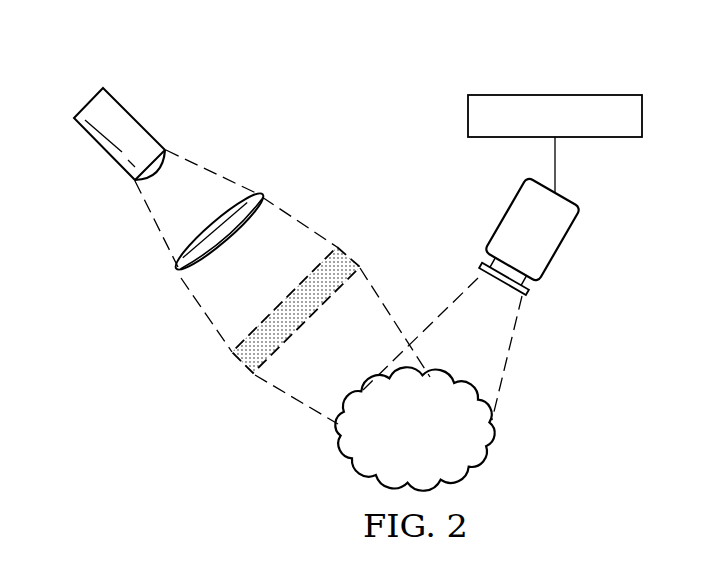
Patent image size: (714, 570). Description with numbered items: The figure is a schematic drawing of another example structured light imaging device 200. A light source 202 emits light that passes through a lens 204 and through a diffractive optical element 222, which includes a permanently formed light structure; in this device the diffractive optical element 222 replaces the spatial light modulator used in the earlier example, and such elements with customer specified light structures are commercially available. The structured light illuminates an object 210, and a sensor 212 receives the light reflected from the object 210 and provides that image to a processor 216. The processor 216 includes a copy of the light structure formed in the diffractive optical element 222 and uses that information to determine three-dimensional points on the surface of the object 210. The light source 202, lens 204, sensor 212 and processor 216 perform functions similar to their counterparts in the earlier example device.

The structured light imaging device 200 is at (400, 65).
The light source 202 is at (103, 148).
The lens 204 is at (177, 273).
The object 210 is at (436, 441).
The sensor 212 is at (562, 248).
The processor 216 is at (563, 94).
The diffractive optical element 222 is at (231, 358).